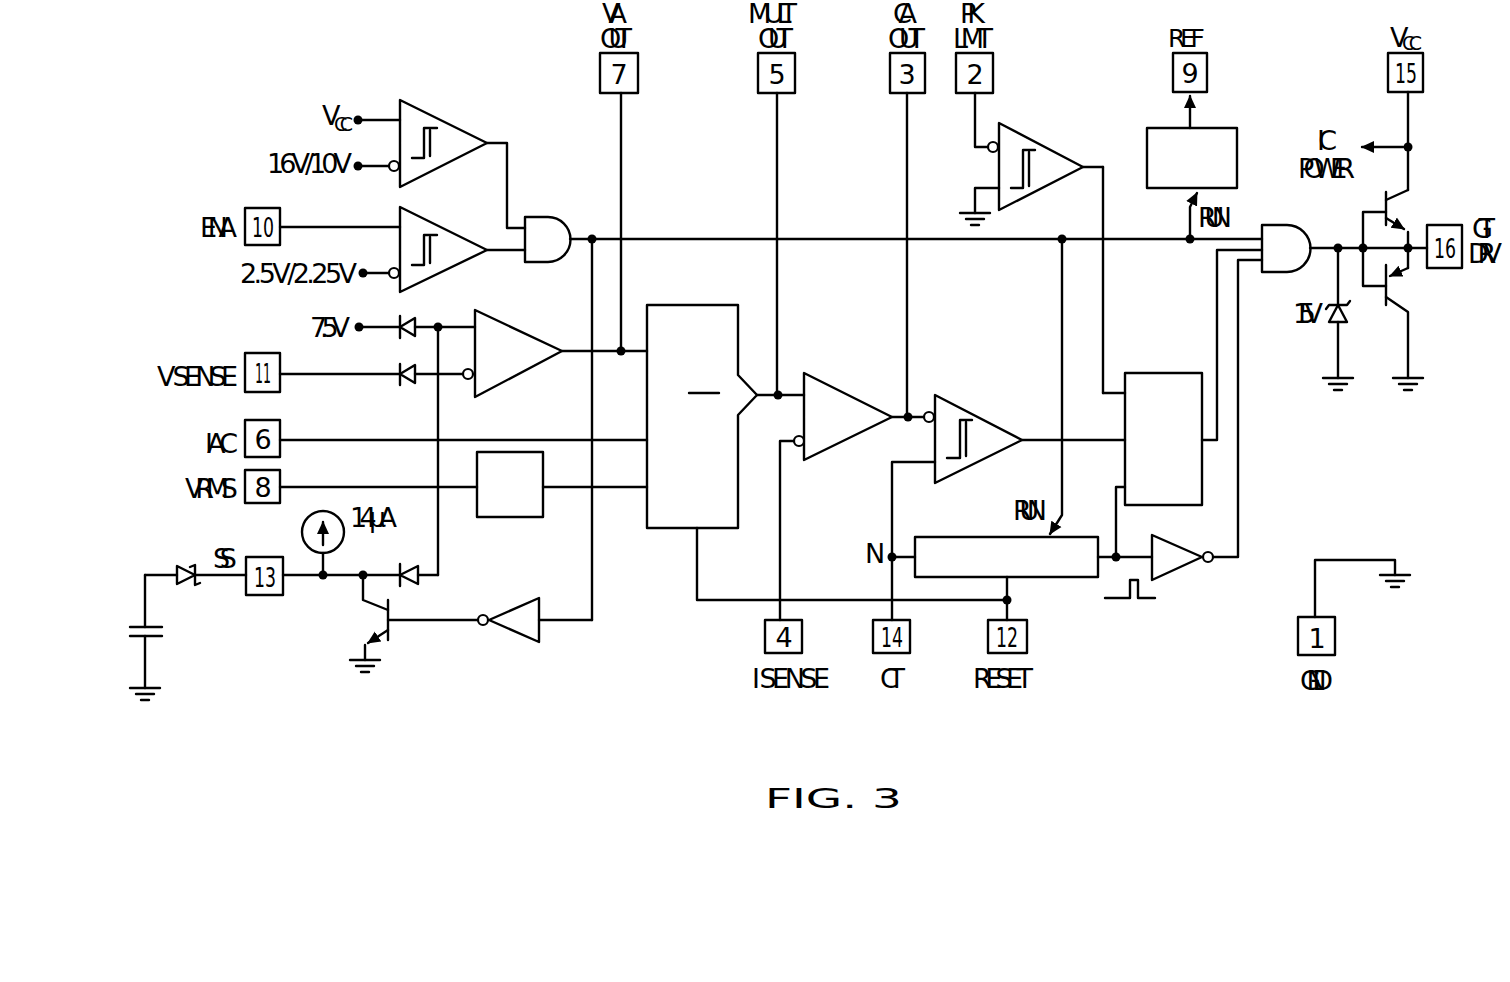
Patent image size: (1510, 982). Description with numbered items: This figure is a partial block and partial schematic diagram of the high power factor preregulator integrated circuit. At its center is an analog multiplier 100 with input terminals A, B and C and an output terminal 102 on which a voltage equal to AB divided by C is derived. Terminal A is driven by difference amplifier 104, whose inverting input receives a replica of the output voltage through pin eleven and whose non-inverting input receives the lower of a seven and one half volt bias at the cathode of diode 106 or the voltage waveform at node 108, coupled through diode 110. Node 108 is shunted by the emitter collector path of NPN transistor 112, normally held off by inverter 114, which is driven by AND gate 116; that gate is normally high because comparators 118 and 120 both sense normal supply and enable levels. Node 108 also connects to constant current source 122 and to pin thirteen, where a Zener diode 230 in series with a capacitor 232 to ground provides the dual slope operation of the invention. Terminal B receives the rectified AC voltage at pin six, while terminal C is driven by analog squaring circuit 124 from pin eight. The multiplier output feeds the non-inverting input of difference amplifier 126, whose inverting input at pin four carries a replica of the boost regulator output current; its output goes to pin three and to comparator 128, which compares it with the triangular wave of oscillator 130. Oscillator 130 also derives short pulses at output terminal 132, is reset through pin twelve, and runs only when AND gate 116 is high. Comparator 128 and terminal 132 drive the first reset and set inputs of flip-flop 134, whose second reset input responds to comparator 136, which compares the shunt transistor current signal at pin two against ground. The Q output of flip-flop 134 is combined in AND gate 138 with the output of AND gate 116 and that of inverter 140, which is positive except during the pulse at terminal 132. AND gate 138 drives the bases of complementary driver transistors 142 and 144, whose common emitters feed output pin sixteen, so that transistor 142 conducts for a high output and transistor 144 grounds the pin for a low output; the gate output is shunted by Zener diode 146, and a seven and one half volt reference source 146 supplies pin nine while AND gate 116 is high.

The analog multiplier 100 is at (713, 317).
The output terminal 102 is at (781, 391).
The difference amplifier 104 is at (524, 336).
The diode 106 is at (411, 320).
The node 108 is at (368, 572).
The diode 110 is at (422, 583).
The NPN transistor 112 is at (373, 620).
The inverter 114 is at (527, 635).
The AND gate 116 is at (553, 215).
The comparator 118 is at (420, 123).
The comparator 120 is at (416, 222).
The constant current source 122 is at (302, 530).
The analog squaring circuit 124 is at (535, 498).
The difference amplifier 126 is at (840, 403).
The comparator 128 is at (982, 430).
The oscillator 130 is at (933, 543).
The output terminal 132 is at (1114, 562).
The flip-flop 134 is at (1163, 382).
The comparator 136 is at (1040, 158).
The AND gate 138 is at (1295, 235).
The inverter 140 is at (1170, 555).
The driver transistor 142 is at (1402, 205).
The driver transistor 144 is at (1397, 287).
The Zener diode 146 is at (1217, 137).
The Zener diode 230 is at (197, 582).
The capacitor 232 is at (168, 633).